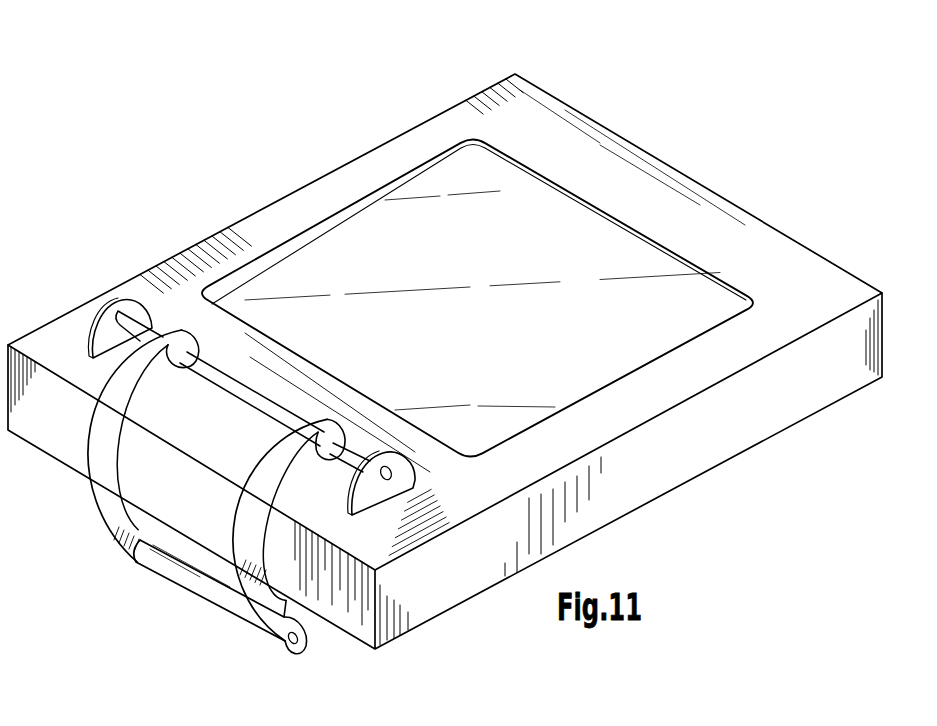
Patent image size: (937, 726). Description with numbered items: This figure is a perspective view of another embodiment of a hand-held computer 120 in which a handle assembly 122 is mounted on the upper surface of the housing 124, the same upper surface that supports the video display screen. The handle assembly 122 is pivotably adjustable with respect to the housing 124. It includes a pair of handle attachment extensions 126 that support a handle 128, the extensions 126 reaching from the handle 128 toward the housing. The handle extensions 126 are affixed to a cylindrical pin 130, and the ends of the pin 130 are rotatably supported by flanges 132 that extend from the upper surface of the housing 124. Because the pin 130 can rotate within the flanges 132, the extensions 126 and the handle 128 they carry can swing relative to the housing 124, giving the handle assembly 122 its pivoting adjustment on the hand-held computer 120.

The hand-held computer 120 is at (350, 108).
The handle assembly 122 is at (287, 425).
The housing 124 is at (540, 152).
The handle attachment extensions 126 is at (110, 487).
The handle 128 is at (190, 577).
The cylindrical pin 130 is at (260, 405).
The flanges 132 is at (112, 343).